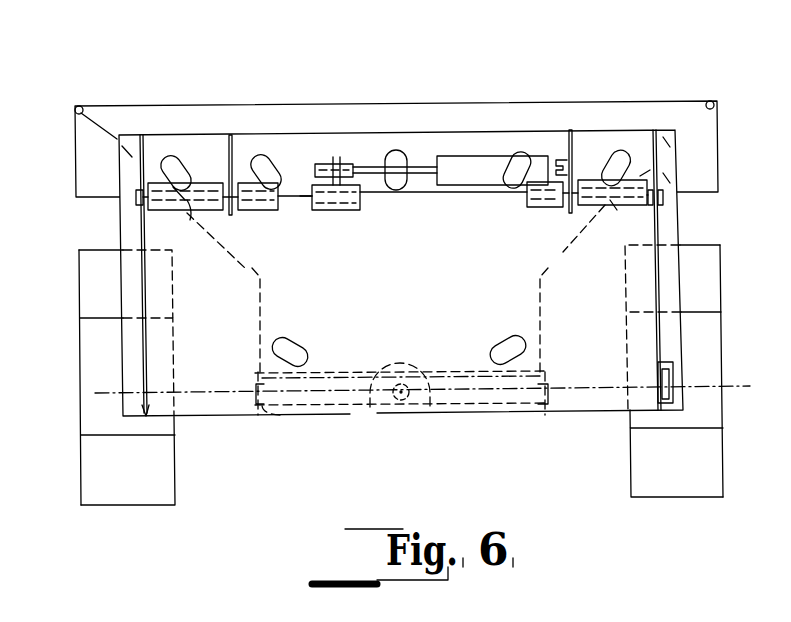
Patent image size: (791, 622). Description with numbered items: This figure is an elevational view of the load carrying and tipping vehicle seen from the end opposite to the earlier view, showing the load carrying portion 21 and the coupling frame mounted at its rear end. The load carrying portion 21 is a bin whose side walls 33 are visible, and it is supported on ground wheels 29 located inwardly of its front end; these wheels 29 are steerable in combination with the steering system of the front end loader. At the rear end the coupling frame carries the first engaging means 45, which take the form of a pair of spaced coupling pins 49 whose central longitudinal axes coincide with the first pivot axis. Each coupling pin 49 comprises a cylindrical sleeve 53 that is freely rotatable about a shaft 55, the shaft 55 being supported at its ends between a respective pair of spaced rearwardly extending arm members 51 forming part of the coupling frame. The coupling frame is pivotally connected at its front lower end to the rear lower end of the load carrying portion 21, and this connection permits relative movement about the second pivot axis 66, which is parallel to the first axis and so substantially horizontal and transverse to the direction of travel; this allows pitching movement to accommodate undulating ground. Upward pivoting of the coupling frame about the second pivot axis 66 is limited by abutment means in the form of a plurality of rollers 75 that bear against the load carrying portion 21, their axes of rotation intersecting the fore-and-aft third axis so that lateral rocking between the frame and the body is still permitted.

The load carrying portion 21 is at (432, 100).
The ground wheels 29 is at (107, 470).
The side walls 33 is at (247, 268).
The first engaging means 45 is at (213, 181).
The coupling pins 49 is at (163, 214).
The arm members 51 is at (140, 140).
The cylindrical sleeve 53 is at (177, 213).
The shaft 55 is at (134, 198).
The second pivot axis 66 is at (694, 388).
The rollers 75 is at (273, 162).